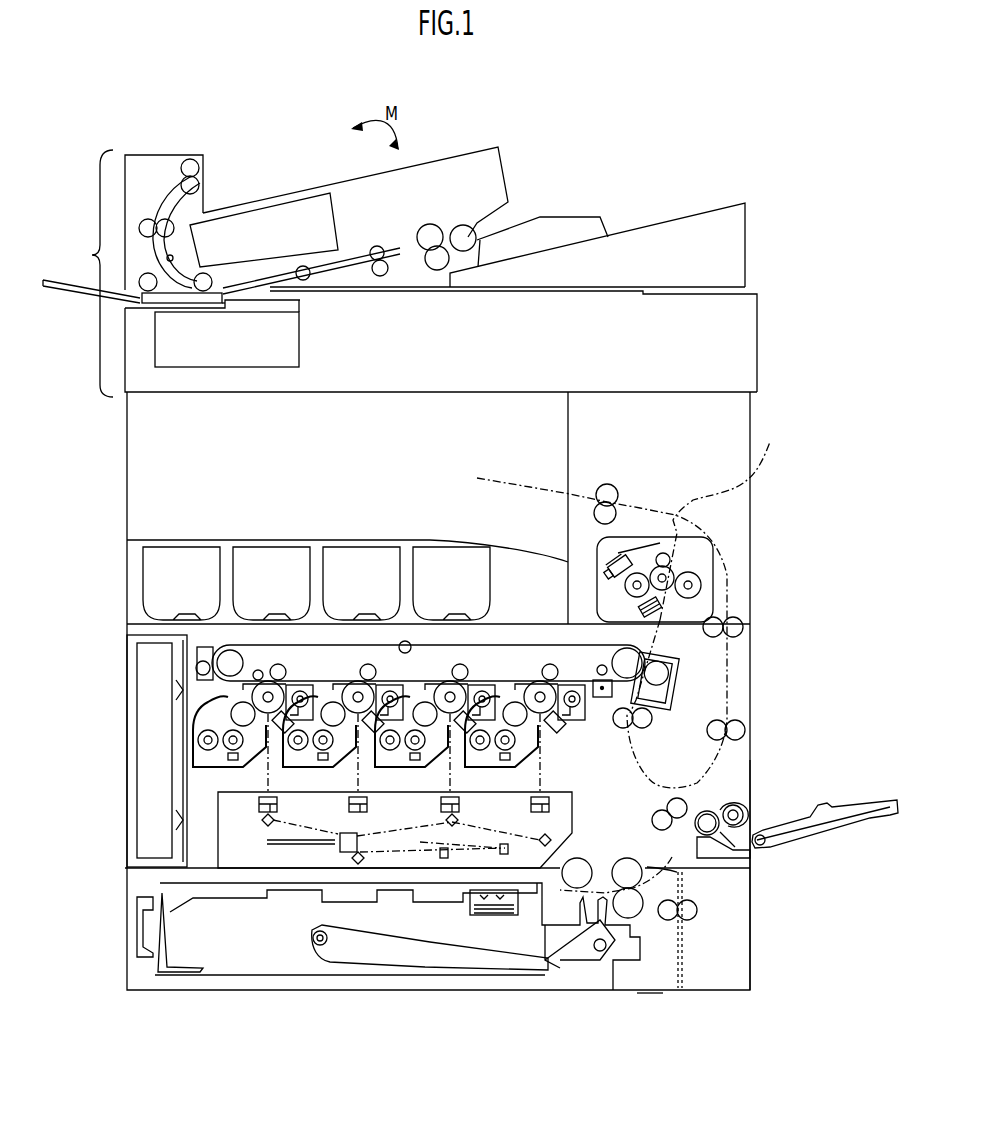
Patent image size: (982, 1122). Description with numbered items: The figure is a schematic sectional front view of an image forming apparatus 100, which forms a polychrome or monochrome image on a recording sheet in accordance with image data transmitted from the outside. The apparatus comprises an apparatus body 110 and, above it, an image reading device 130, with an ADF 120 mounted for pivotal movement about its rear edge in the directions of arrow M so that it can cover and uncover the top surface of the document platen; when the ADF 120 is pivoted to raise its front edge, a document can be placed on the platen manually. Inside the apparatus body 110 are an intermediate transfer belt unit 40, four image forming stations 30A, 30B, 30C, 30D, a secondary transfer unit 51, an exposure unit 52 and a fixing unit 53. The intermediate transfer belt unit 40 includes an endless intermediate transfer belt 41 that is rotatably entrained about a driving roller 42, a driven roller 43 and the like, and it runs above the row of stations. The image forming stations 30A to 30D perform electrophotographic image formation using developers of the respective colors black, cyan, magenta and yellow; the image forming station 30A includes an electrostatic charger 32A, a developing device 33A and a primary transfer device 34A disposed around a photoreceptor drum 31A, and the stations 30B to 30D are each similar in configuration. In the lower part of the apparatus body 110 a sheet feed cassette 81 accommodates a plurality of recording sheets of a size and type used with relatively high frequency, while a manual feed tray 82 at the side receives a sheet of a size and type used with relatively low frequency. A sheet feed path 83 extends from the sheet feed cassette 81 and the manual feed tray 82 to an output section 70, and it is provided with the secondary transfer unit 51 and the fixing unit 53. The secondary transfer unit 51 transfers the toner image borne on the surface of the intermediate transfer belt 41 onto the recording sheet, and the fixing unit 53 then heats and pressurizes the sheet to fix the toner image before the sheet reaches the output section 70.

The image forming apparatus 100 is at (783, 128).
The apparatus body 110 is at (108, 685).
The ADF 120 is at (767, 227).
The image reading device 130 is at (88, 268).
The output section 70 is at (258, 494).
The image forming station 30A is at (536, 660).
The image forming station 30B is at (413, 682).
The image forming station 30C is at (323, 682).
The image forming station 30D is at (232, 682).
The photoreceptor drum 31A is at (547, 694).
The electrostatic charger 32A is at (567, 730).
The developing device 33A is at (537, 758).
The primary transfer device 34A is at (550, 669).
The intermediate transfer belt unit 40 is at (367, 595).
The intermediate transfer belt 41 is at (367, 645).
The driving roller 42 is at (617, 657).
The driven roller 43 is at (187, 643).
The secondary transfer unit 51 is at (685, 670).
The exposure unit 52 is at (570, 813).
The fixing unit 53 is at (713, 585).
The sheet feed cassette 81 is at (620, 977).
The manual feed tray 82 is at (833, 827).
The sheet feed path 83 is at (722, 516).